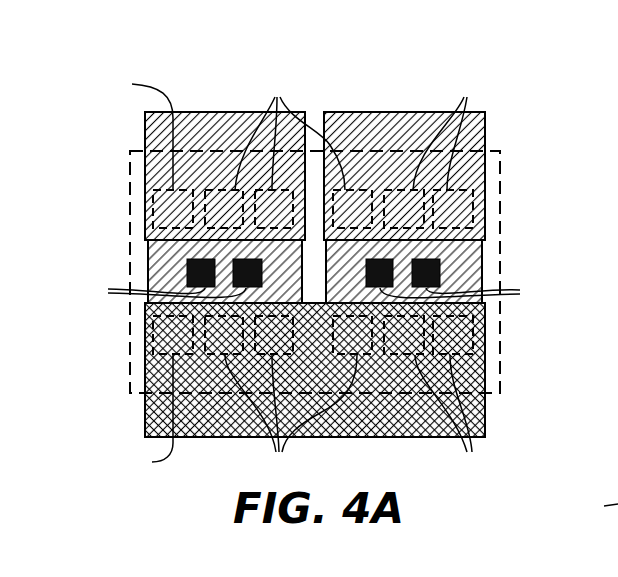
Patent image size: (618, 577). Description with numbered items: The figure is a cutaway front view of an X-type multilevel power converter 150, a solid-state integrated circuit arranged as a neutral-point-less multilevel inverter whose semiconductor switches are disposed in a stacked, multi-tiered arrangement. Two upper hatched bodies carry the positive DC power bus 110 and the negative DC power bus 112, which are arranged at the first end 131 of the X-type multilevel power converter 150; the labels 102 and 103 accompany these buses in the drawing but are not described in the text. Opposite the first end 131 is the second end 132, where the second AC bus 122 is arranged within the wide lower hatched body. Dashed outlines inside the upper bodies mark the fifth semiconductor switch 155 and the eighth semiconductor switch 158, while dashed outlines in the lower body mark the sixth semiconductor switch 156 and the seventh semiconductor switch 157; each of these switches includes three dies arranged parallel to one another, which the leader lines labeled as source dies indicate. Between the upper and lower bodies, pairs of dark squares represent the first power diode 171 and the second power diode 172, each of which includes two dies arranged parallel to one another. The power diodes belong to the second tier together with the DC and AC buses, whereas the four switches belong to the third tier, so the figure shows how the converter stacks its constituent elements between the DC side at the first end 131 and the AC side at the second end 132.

The X-type multilevel power converter 150 is at (312, 82).
The first substrate 102 is at (225, 144).
The positive DC power bus 110 is at (222, 112).
The second substrate 103 is at (404, 144).
The negative DC power bus 112 is at (405, 112).
The first end 131 is at (176, 144).
The second end 132 is at (266, 385).
The second AC bus 122 is at (143, 433).
The fifth semiconductor switch S5 155 is at (152, 209).
The eighth semiconductor switch S8 158 is at (474, 209).
The sixth semiconductor switch S6 156 is at (152, 326).
The seventh semiconductor switch S7 157 is at (474, 327).
The first power diode 171 is at (186, 271).
The second power diode 172 is at (443, 271).